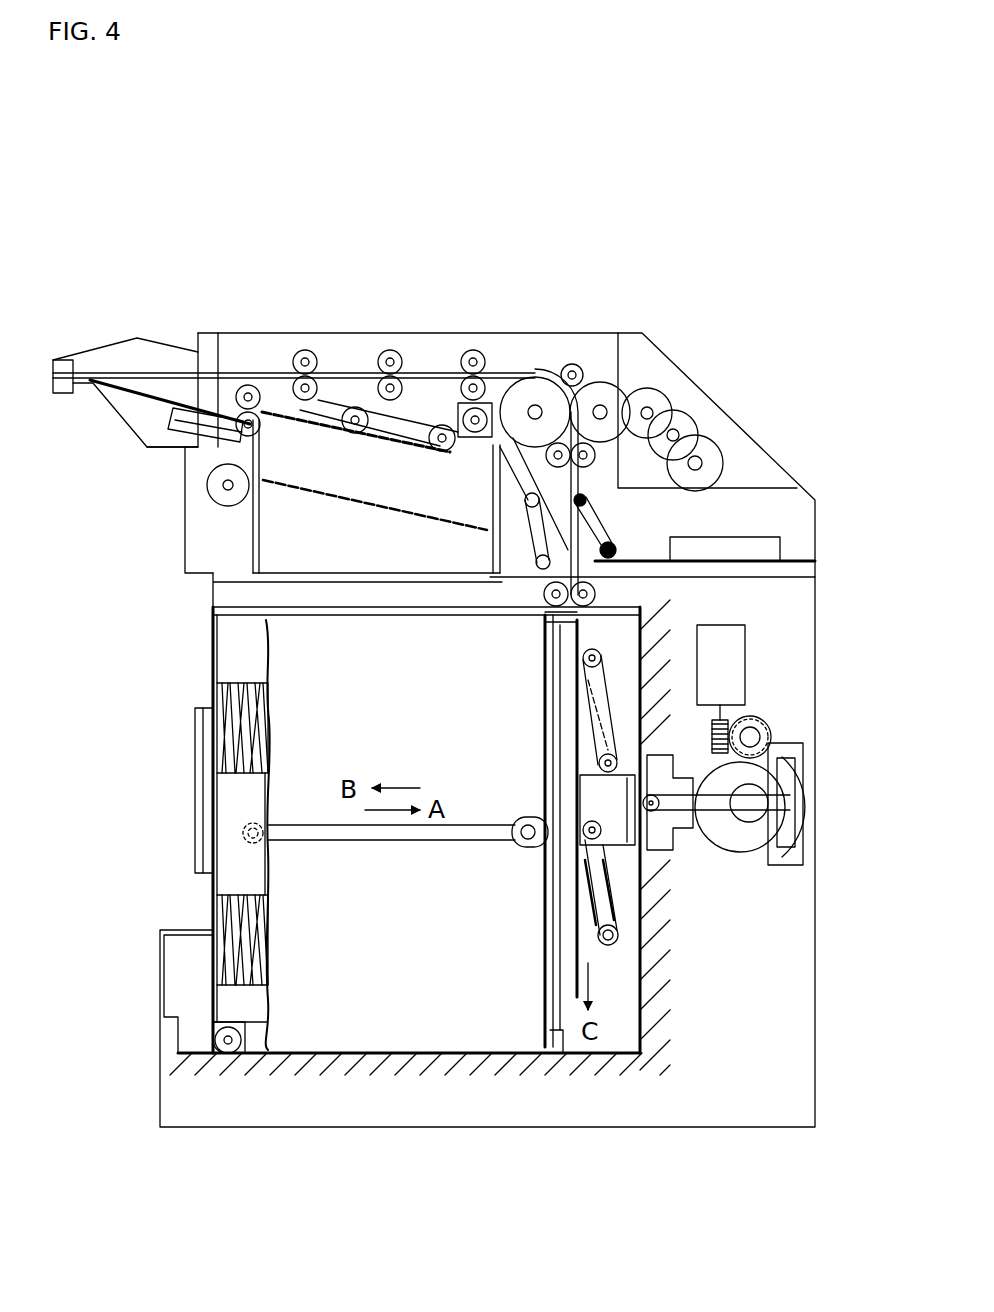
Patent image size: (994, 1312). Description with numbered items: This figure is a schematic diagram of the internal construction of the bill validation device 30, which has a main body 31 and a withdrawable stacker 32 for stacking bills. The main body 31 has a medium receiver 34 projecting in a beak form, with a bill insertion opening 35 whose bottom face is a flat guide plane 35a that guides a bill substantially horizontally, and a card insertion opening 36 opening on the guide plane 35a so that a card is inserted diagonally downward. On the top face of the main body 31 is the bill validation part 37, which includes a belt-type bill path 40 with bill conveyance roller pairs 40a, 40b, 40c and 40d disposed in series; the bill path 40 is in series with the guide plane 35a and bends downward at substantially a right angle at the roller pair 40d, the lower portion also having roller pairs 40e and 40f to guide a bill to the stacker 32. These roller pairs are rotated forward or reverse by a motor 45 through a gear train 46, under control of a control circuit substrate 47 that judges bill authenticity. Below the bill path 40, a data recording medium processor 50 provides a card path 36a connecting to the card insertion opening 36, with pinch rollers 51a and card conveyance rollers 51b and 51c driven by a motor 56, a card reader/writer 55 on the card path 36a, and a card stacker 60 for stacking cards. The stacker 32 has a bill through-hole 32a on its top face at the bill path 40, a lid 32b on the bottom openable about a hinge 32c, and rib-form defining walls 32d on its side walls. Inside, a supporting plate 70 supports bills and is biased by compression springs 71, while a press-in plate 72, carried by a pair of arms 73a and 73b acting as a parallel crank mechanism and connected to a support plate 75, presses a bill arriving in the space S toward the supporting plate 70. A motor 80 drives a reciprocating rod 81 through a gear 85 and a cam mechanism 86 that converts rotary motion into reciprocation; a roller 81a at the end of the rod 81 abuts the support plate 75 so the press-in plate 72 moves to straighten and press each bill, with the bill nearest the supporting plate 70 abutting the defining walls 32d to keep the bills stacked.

The bill validation device 30 is at (645, 232).
The main body 31 is at (672, 350).
The stacker 32 is at (462, 1030).
The bill through-hole 32a is at (560, 618).
The lid 32b is at (355, 1045).
The hinge 32c is at (225, 1055).
The defining walls 32d is at (560, 1035).
The medium receiver 34 is at (172, 335).
The bill insertion opening 35 is at (56, 378).
The guide plane 35a is at (80, 372).
The card insertion opening 36 is at (84, 385).
The card path 36a is at (140, 395).
The bill validation part 37 is at (300, 328).
The bill path 40 is at (360, 345).
The bill conveyance roller pair 40a is at (320, 350).
The bill conveyance roller pair 40b is at (404, 350).
The bill conveyance roller pair 40c is at (487, 350).
The bill conveyance roller pair 40d is at (576, 360).
The roller pair 40e is at (585, 468).
The roller pair 40f is at (597, 590).
The motor 45 is at (712, 448).
The gear train 46 is at (700, 408).
The control circuit substrate 47 is at (760, 535).
The data recording medium processor 50 is at (150, 592).
The pinch rollers 51a is at (252, 385).
The card conveyance roller 51b is at (352, 433).
The card conveyance roller 51c is at (444, 451).
The card reader/writer 55 is at (184, 430).
The motor 56 is at (210, 495).
The card stacker 60 is at (240, 578).
The supporting plate 70 is at (545, 960).
The compression springs 71 is at (272, 722).
The press-in plate 72 is at (590, 943).
The arm 73a is at (610, 700).
The arm 73b is at (615, 915).
The support plate 75 is at (640, 838).
The motor 80 is at (742, 650).
The reciprocating rod 81 is at (722, 803).
The roller 81a is at (653, 800).
The gear 85 is at (774, 736).
The cam mechanism 86 is at (808, 795).
The space S is at (570, 738).